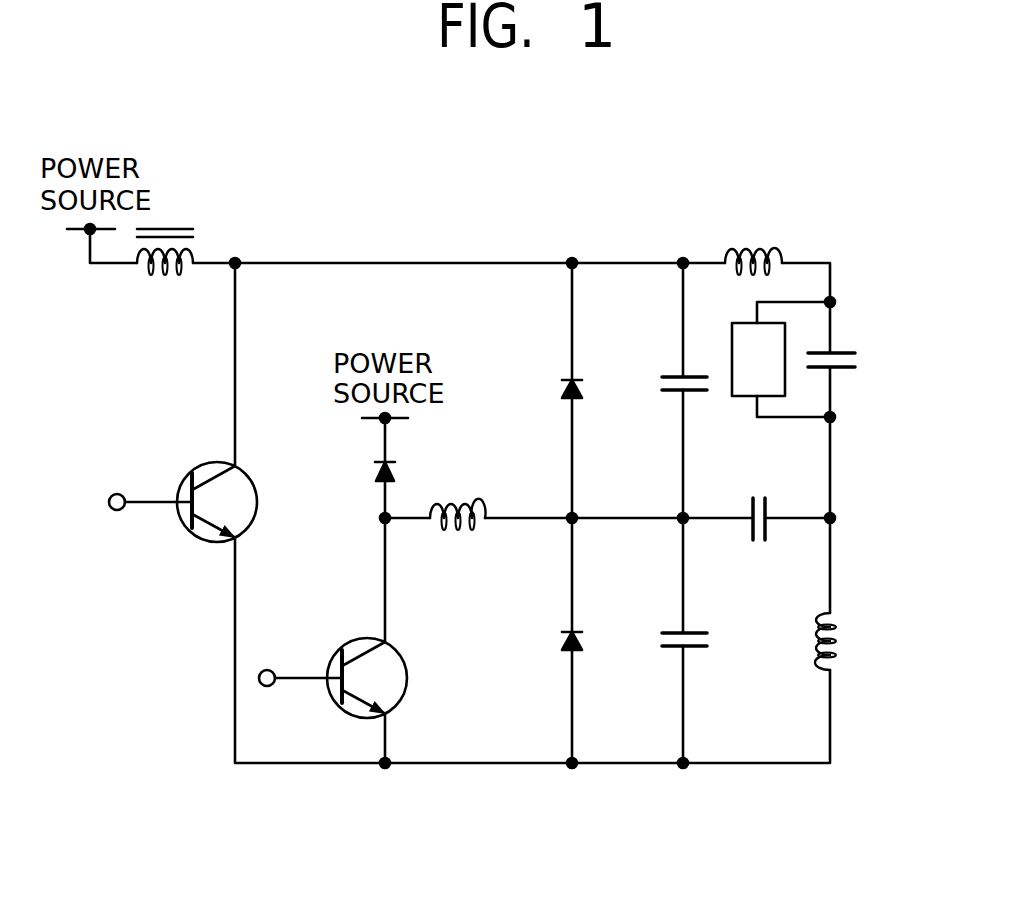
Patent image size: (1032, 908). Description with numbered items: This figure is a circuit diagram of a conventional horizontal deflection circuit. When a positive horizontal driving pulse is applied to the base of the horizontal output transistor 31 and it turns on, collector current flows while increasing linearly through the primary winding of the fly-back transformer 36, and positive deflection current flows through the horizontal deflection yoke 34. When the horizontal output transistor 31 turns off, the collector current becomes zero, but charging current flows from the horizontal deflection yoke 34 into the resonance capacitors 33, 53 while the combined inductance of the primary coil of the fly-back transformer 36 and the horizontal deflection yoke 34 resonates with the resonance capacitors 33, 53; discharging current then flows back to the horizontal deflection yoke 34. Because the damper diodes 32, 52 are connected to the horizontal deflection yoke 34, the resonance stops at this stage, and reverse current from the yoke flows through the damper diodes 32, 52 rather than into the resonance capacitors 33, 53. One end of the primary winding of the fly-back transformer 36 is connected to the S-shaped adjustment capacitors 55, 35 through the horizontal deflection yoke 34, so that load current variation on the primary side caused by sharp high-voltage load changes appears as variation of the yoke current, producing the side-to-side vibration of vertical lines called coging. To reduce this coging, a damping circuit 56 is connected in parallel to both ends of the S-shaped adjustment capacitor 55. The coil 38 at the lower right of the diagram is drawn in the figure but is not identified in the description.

The horizontal output transistor 31 is at (190, 472).
The damper diode 32 is at (553, 635).
The resonance capacitor 33 is at (668, 650).
The horizontal deflection yoke 34 is at (763, 248).
The S-shaped adjustment capacitor 35 is at (758, 540).
The fly-back transformer 36 is at (202, 247).
The inductor 38 is at (847, 635).
The damper diode 52 is at (555, 390).
The resonance capacitor 53 is at (670, 375).
The S-shaped adjustment capacitor 55 is at (860, 360).
The damping circuit 56 is at (738, 396).